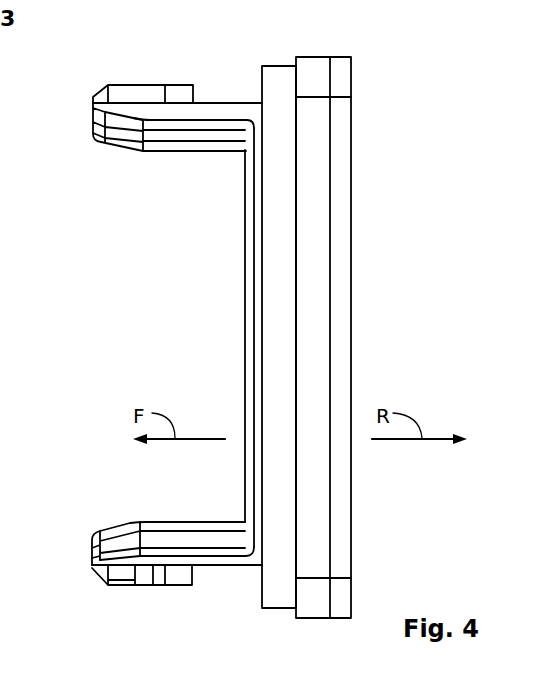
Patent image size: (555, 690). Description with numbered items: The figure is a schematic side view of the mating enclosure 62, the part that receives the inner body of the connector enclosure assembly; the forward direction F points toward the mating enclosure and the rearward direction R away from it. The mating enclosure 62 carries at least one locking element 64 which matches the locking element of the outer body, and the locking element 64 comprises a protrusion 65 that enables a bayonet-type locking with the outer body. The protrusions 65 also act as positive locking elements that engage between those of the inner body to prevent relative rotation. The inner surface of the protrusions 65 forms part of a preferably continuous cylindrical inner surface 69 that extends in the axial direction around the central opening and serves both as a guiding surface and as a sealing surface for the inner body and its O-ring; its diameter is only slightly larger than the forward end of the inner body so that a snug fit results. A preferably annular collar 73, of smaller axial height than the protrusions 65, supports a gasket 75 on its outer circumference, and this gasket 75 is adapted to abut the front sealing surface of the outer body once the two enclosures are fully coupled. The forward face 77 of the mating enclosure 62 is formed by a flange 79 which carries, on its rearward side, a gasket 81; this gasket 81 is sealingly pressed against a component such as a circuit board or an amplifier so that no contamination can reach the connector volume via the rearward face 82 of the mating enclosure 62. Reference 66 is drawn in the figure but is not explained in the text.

The mating enclosure 62 is at (396, 114).
The locking element 64 is at (137, 95).
The protrusion 65 is at (205, 115).
The hook end 66 is at (86, 119).
The inner surface 69 is at (182, 159).
The collar 73 is at (258, 290).
The gasket 75 is at (272, 225).
The forward face 77 is at (288, 600).
The flange 79 is at (312, 70).
The gasket 81 is at (343, 315).
The rearward face 82 is at (340, 553).